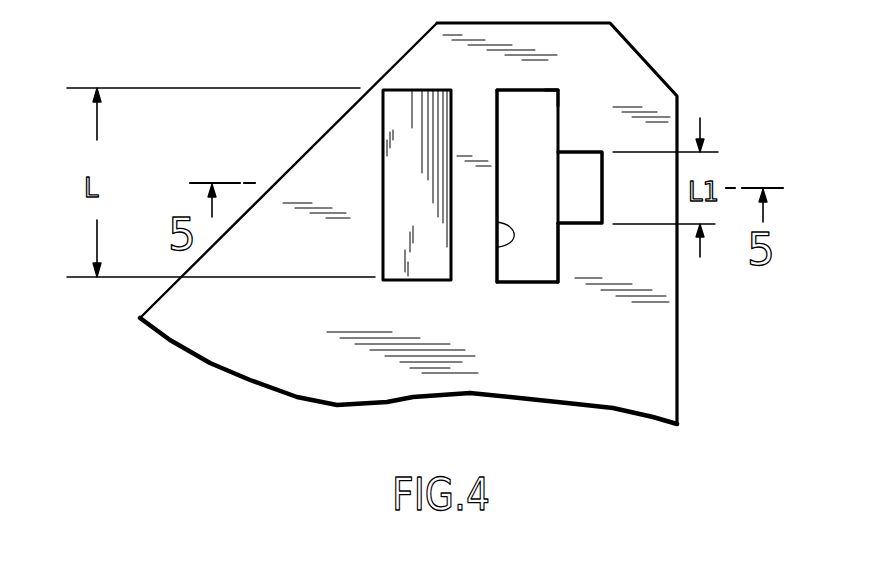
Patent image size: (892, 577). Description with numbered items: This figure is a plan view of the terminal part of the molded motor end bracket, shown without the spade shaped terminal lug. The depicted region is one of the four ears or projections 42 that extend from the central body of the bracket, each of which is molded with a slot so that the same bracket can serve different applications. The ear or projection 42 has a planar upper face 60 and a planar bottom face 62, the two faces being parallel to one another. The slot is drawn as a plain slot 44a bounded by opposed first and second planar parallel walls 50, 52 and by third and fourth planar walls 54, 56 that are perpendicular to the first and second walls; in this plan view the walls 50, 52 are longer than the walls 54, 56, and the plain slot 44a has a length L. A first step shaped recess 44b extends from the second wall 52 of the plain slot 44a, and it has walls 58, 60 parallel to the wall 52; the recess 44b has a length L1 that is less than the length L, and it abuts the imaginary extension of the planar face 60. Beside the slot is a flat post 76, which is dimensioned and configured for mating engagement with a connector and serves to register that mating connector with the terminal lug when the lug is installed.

The ear or projection 42 is at (439, 223).
The plain slot 44a is at (517, 108).
The first step shaped recess 44b is at (570, 150).
The first planar parallel wall 50 is at (497, 247).
The second planar parallel wall 52 is at (558, 257).
The third planar wall 54 is at (546, 98).
The fourth planar wall 56 is at (518, 276).
The recess wall 58 is at (556, 198).
The planar upper face 60 is at (603, 193).
The planar bottom face 62 is at (525, 373).
The flat post 76 is at (431, 282).